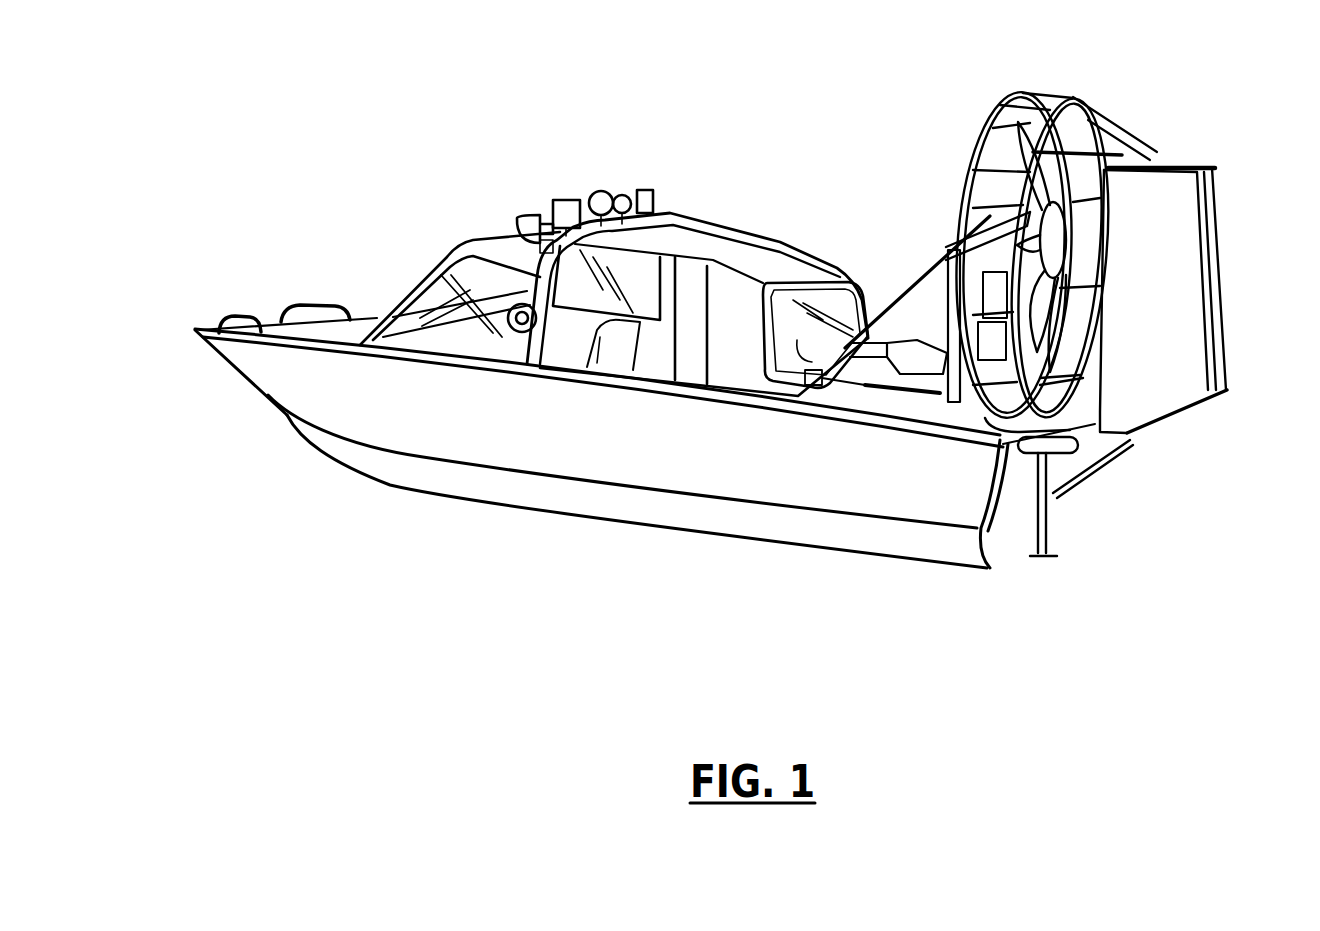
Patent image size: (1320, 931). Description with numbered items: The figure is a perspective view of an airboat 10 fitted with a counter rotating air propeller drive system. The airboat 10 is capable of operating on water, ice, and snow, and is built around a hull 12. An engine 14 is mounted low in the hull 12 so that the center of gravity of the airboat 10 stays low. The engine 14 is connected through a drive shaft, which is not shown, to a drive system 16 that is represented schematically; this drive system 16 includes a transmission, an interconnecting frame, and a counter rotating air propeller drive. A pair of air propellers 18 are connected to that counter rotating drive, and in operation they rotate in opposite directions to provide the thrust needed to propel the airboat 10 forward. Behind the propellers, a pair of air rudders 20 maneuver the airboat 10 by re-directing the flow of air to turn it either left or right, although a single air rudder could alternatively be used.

The airboat 10 is at (283, 278).
The hull 12 is at (567, 501).
The engine 14 is at (898, 380).
The drive system 16 is at (950, 256).
The air propellers 18 is at (1030, 192).
The air rudders 20 is at (1157, 408).